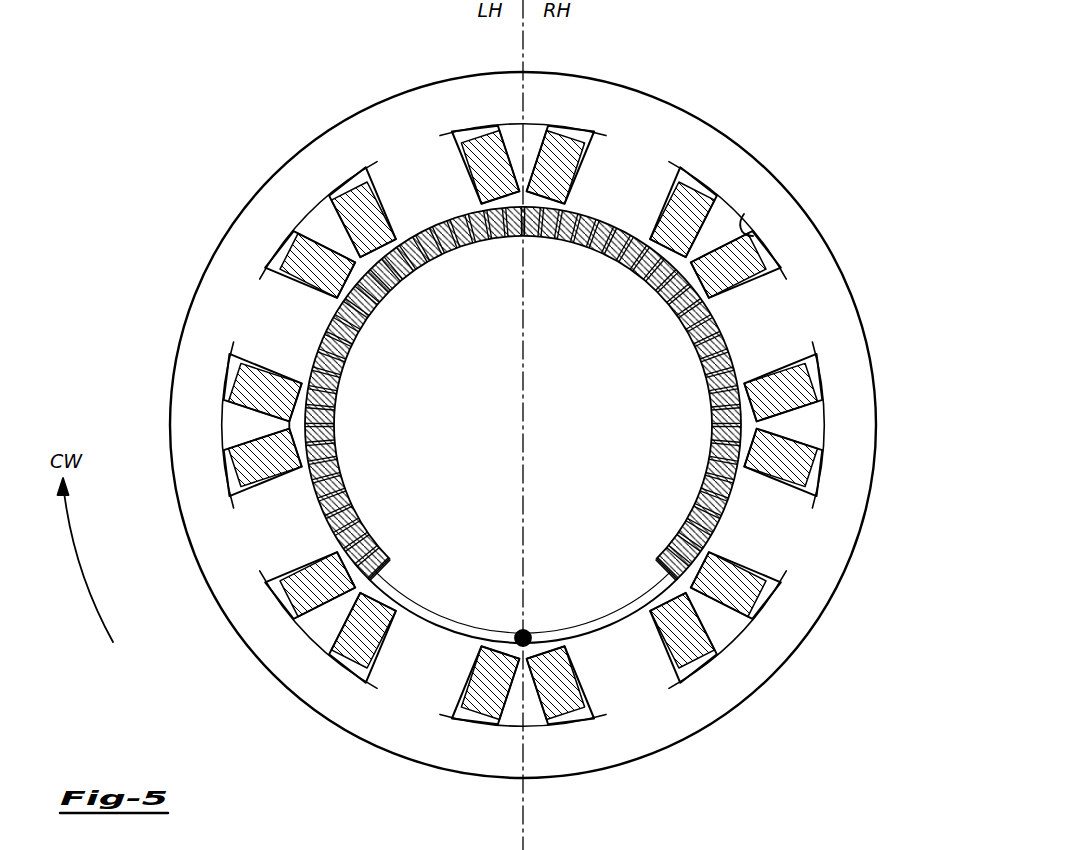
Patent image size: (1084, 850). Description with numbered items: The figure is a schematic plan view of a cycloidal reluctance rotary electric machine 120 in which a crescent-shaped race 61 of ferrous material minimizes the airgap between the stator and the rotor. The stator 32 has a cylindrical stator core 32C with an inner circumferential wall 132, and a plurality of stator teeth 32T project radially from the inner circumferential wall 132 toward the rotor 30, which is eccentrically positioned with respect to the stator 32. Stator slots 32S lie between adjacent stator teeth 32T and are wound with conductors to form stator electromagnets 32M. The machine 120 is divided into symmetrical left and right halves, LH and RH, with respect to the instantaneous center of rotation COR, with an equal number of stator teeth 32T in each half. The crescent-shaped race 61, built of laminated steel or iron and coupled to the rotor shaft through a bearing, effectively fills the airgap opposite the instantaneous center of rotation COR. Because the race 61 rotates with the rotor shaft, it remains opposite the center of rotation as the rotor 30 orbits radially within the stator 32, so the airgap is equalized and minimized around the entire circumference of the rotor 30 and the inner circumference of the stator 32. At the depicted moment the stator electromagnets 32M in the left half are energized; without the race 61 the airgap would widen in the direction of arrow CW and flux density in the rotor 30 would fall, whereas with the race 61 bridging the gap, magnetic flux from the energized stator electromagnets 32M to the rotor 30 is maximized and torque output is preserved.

The rotary electric machine 120 is at (850, 62).
The stator 32 is at (647, 92).
The cylindrical stator core 32C is at (833, 295).
The rotor 30 is at (470, 443).
The stator slots 32S is at (332, 227).
The stator electromagnets 32M is at (478, 137).
The stator teeth 32T is at (427, 193).
The crescent-shaped race 61 is at (303, 420).
The inner circumferential wall 132 is at (753, 236).
The instantaneous center of rotation COR is at (518, 645).